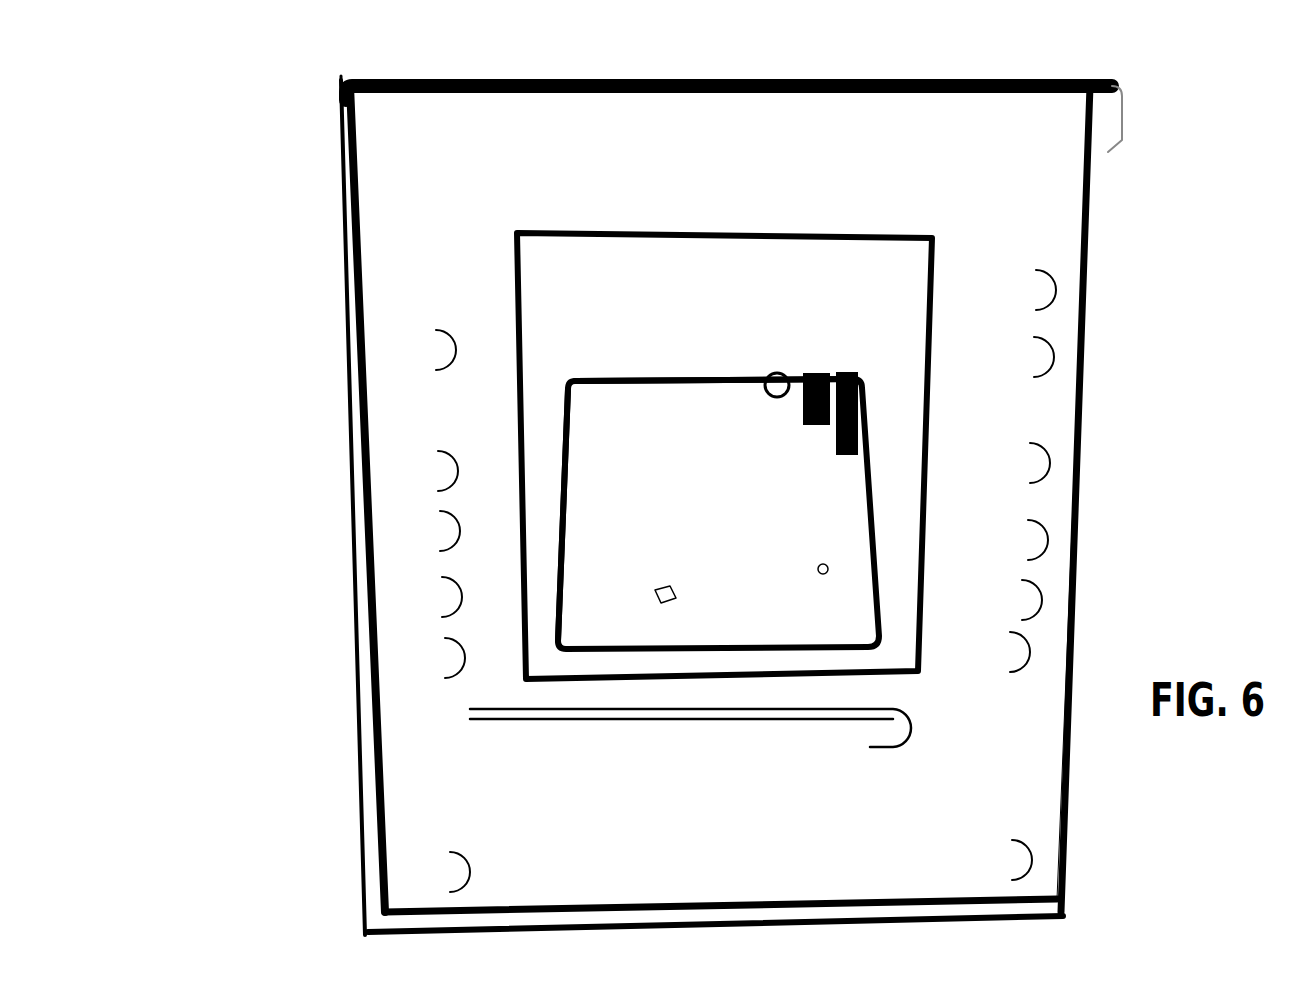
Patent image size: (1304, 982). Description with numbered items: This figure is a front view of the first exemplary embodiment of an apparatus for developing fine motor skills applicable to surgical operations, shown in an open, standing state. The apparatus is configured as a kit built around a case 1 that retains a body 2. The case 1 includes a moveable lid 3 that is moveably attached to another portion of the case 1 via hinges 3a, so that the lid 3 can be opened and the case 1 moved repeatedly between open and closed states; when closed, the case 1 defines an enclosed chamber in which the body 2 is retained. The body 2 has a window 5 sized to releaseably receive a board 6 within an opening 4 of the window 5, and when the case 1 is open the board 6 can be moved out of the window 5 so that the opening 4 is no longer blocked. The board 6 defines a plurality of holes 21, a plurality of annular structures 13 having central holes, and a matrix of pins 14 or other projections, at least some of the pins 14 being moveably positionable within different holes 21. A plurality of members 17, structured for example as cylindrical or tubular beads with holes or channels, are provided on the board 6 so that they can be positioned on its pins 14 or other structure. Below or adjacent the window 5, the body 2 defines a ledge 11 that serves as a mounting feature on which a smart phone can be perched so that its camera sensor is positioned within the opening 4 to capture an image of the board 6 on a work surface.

The case 1 is at (350, 520).
The body 2 is at (463, 230).
The lid 3 is at (415, 72).
The hinges 3a is at (328, 97).
The opening 4 is at (845, 272).
The window 5 is at (520, 428).
The board 6 is at (630, 397).
The ledge 11 is at (637, 738).
The annular structures 13 is at (657, 590).
The pins 14 is at (861, 478).
The members 17 is at (853, 372).
The holes 21 is at (825, 568).